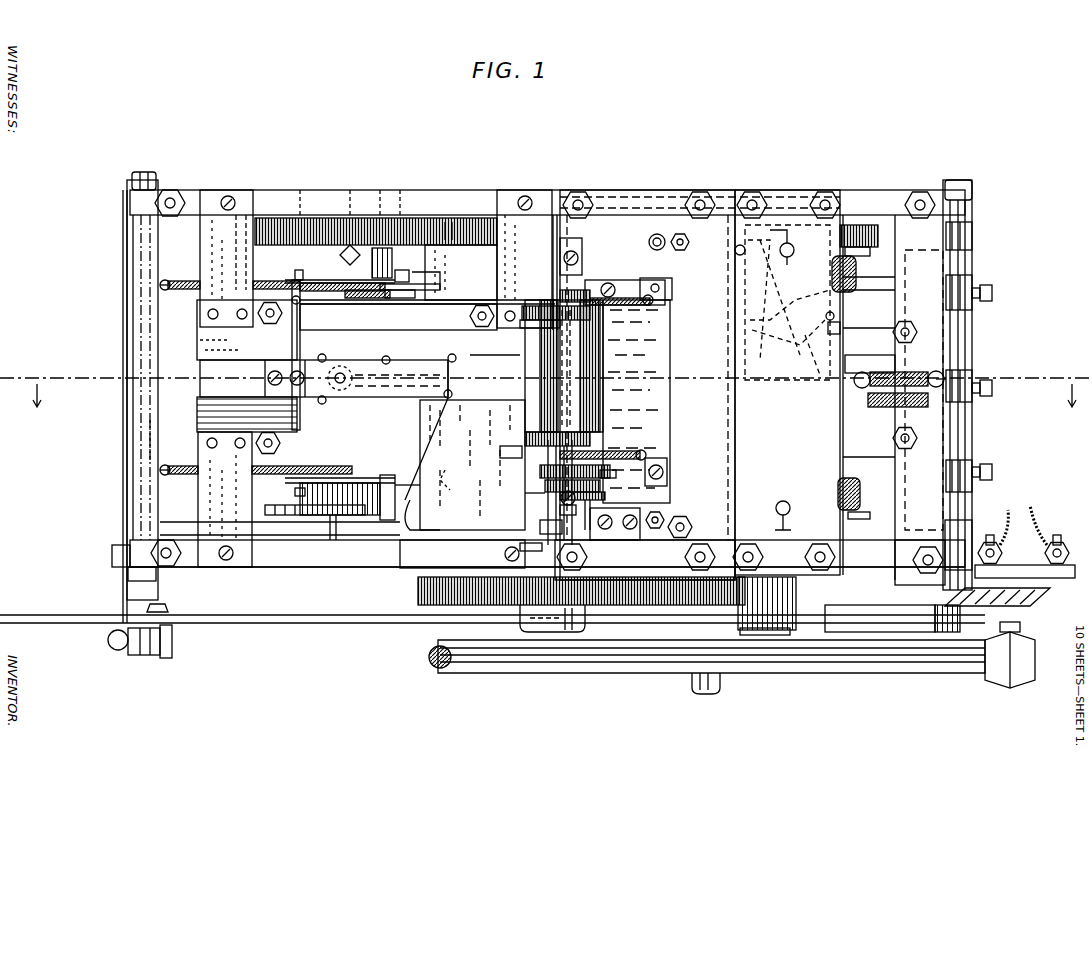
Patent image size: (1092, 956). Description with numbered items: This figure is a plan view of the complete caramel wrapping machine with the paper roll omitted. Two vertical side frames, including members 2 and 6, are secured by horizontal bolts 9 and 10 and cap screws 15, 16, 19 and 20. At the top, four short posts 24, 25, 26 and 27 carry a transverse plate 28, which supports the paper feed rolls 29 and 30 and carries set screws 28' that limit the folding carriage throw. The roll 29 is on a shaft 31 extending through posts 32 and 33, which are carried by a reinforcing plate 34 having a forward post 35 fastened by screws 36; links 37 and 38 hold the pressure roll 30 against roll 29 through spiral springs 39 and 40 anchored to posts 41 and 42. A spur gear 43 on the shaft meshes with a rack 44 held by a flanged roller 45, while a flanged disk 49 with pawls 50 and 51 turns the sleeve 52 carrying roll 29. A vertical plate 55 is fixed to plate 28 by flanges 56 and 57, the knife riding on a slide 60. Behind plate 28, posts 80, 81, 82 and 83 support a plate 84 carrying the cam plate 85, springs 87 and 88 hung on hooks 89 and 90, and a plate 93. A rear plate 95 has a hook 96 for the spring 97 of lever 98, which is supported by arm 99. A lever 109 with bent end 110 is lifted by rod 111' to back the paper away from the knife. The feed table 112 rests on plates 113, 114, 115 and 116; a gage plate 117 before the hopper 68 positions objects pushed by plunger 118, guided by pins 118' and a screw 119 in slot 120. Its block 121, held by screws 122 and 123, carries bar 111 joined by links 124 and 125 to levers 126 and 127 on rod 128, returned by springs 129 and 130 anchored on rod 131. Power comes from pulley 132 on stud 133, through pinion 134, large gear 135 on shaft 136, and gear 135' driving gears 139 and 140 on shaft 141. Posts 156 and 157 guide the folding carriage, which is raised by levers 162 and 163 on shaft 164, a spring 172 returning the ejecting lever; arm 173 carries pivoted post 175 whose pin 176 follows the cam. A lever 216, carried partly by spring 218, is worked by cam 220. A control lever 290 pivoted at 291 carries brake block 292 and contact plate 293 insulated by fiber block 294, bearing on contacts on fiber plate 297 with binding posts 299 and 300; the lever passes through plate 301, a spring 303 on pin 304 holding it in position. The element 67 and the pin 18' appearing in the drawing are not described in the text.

The side frame member 2 is at (292, 567).
The side frame member 6 is at (546, 388).
The horizontally extending bolt 9 is at (132, 405).
The horizontally extending bolt 10 is at (973, 238).
The cap screw 15 is at (930, 576).
The cap screw 16 is at (166, 566).
The cap screw 19 is at (926, 194).
The cap screw 20 is at (178, 196).
The short post 24 is at (557, 557).
The short post 25 is at (690, 526).
The short post 26 is at (706, 195).
The short post 27 is at (586, 195).
The transversely extending plate 28 is at (647, 385).
The set screw 28' is at (692, 242).
The paper feed roll 29 is at (604, 369).
The pressure roll 30 is at (525, 381).
The shaft 31 is at (549, 492).
The post 32 is at (590, 318).
The post 33 is at (591, 440).
The reinforcing plate 34 is at (670, 386).
The post 35 is at (645, 560).
The screws 36 is at (640, 536).
The link 37 is at (535, 302).
The link 38 is at (520, 453).
The spiral spring 39 is at (622, 288).
The spiral spring 40 is at (641, 455).
The post 41 is at (667, 469).
The post 42 is at (672, 292).
The spur gear 43 is at (590, 531).
The rack 44 is at (518, 548).
The flanged roller 45 is at (540, 525).
The flanged disk 49 is at (540, 472).
The spring operating pawl 50 is at (612, 481).
The spring operating pawl 51 is at (545, 485).
The sleeve 52 is at (585, 292).
The vertically extending plate 55 is at (553, 278).
The flange 56 is at (583, 268).
The flange 57 is at (560, 512).
The knife slide 60 is at (850, 364).
The arm 67 is at (525, 494).
The feeding hopper 68 is at (472, 465).
The post 80 is at (764, 553).
The post 81 is at (811, 557).
The post 82 is at (830, 196).
The post 83 is at (760, 196).
The plate 84 is at (787, 382).
The cam plate 85 is at (841, 322).
The spring 87 is at (860, 496).
The spring 88 is at (856, 270).
The hook 89 is at (868, 519).
The hook 90 is at (870, 251).
The plate 93 is at (832, 458).
The transversely extending plate 95 is at (942, 356).
The hook 96 is at (973, 381).
The spring 97 is at (905, 372).
The lever 98 is at (867, 375).
The arm 99 is at (893, 336).
The lever 109 is at (420, 306).
The upwardly bent end 110 is at (400, 300).
The bar 111 is at (248, 330).
The rod 111' is at (310, 355).
The feed table 112 is at (452, 300).
The plate 113 is at (240, 196).
The plate 114 is at (514, 197).
The plate 115 is at (240, 568).
The plate 116 is at (498, 554).
The gage plate 117 is at (484, 354).
The plunger 118 is at (350, 349).
The guide pin 118' is at (430, 377).
The screw 119 is at (342, 366).
The slot 120 is at (450, 384).
The block 121 is at (272, 396).
The screw 122 is at (265, 376).
The screw 123 is at (336, 380).
The link 124 is at (320, 279).
The link 125 is at (295, 479).
The operating lever 126 is at (398, 482).
The operating lever 127 is at (432, 282).
The rod 128 is at (390, 279).
The spring 129 is at (185, 283).
The spring 130 is at (185, 467).
The transversely extending rod 131 is at (140, 437).
The pulley 132 is at (856, 674).
The stud 133 is at (698, 690).
The pinion 134 is at (797, 596).
The large gear 135 is at (558, 591).
The gear 135' is at (457, 197).
The shaft 136 is at (545, 634).
The gear 139 is at (860, 222).
The gear 140 is at (318, 217).
The shaft 141 is at (365, 298).
The post 156 is at (657, 234).
The post 157 is at (664, 517).
The lever 162 is at (973, 290).
The lever 163 is at (973, 486).
The shaft 164 is at (966, 438).
The spring 172 is at (880, 408).
The arm 173 is at (735, 252).
The pivoted post 175 is at (778, 278).
The pin 176 is at (766, 322).
The lever 216 is at (331, 521).
The spring 218 is at (470, 508).
The cam 220 is at (305, 516).
The lever 290 is at (264, 625).
The pivot 291 is at (766, 636).
The brake block 292 is at (1036, 651).
The split contact plate 293 is at (1032, 599).
The fiber block 294 is at (961, 623).
The fiber plate 297 is at (1000, 577).
The binding post 299 is at (1057, 538).
The binding post 300 is at (990, 538).
The plate 301 is at (123, 600).
The spring 303 is at (145, 655).
The pin 304 is at (172, 639).
The pin 18' is at (315, 409).